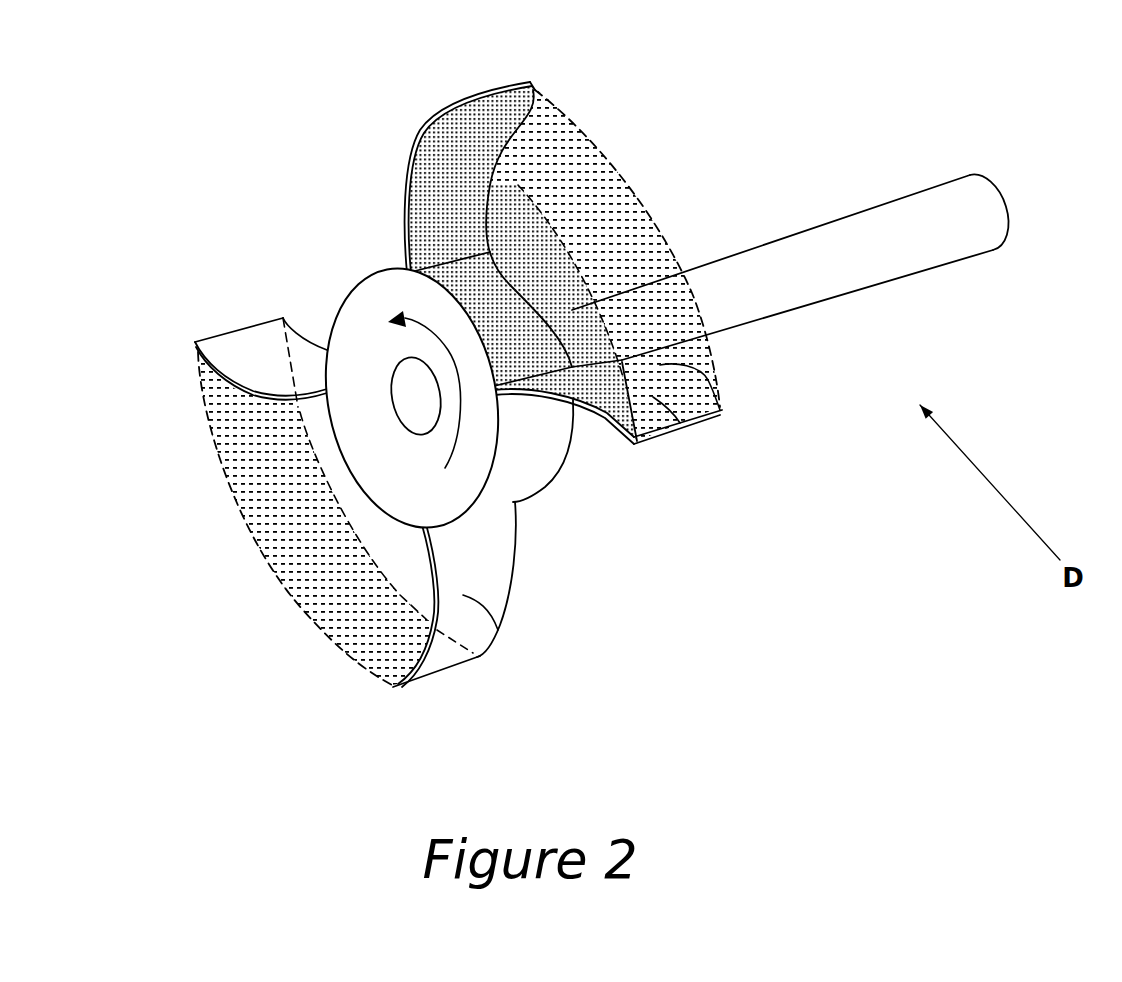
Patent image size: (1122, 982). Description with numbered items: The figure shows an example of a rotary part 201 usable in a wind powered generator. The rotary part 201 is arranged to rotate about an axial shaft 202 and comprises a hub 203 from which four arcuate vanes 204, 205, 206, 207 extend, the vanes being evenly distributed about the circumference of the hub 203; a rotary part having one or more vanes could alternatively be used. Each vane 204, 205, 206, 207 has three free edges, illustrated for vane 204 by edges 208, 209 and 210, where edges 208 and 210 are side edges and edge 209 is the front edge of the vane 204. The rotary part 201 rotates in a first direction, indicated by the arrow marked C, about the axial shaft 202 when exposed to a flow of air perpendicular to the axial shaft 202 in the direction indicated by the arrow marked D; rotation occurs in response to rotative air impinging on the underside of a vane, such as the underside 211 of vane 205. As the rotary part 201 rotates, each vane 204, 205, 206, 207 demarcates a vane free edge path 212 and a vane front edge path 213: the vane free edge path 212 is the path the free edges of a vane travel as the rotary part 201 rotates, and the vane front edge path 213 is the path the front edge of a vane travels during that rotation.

The rotary part 201 is at (549, 383).
The axial shaft 202 is at (910, 233).
The hub 203 is at (455, 493).
The vane 204 is at (696, 437).
The vane 205 is at (548, 233).
The vane 206 is at (261, 453).
The vane 207 is at (515, 503).
The side edge 208 is at (704, 365).
The front edge 209 is at (707, 410).
The side edge 210 is at (600, 400).
The underside 211 is at (443, 192).
The vane free edge path 212 is at (593, 188).
The vane front edge path 213 is at (280, 547).